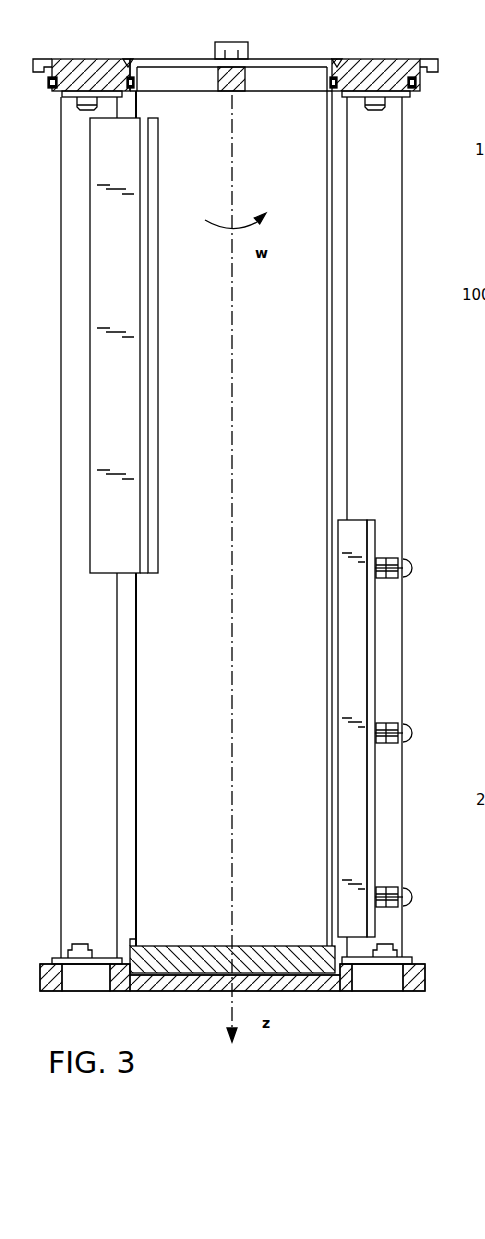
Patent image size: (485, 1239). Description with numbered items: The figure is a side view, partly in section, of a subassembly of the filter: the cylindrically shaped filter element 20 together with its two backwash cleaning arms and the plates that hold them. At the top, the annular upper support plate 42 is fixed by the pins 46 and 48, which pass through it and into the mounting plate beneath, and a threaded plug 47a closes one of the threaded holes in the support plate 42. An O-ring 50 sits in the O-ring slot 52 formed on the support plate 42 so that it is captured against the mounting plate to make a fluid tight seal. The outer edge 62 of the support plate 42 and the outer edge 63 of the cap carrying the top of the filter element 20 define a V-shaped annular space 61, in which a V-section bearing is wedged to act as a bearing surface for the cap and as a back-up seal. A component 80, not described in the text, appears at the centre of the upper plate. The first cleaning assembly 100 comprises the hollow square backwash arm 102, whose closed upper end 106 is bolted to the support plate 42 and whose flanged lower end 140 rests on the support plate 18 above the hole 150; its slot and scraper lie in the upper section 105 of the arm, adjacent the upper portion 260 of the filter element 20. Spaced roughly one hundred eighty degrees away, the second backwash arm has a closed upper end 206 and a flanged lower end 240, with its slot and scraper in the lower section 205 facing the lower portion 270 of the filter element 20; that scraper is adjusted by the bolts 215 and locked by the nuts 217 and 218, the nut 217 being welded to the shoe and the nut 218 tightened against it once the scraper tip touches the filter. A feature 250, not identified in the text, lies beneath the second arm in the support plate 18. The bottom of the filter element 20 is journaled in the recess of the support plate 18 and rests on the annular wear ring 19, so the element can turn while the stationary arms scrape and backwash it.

The pin 46 is at (32, 62).
The annular upper support plate 42 is at (363, 56).
The pin 48 is at (438, 65).
The outer edge of the support plate 62 is at (118, 61).
The V-shaped annular space 61 is at (128, 61).
The outer edge of the cap 63 is at (140, 67).
The threaded plug 47a is at (250, 48).
The shaft stub 80 is at (237, 92).
The O-ring 50 is at (47, 82).
The O-ring slot 52 is at (60, 97).
The closed upper end of the backwash arm 106 is at (77, 100).
The closed upper end of the second backwash arm 206 is at (401, 100).
The upper portion of the filter element 260 is at (347, 200).
The filter element 20 is at (332, 372).
The lower portion of the filter element 270 is at (165, 665).
The backwash arm 102 is at (90, 378).
The upper section of the backwash arm 105 is at (90, 447).
The first cleaning assembly 100 is at (76, 295).
The lower section of the second backwash arm 205 is at (328, 775).
The locking nut 217 is at (380, 558).
The locking nut 218 is at (390, 558).
The bolt 215 is at (412, 570).
The support plate 18 is at (425, 980).
The hole 150 is at (90, 982).
The support block 250 is at (385, 975).
The wear ring 19 is at (330, 985).
The flanged lower end 140 is at (105, 948).
The flanged lower end of the second backwash arm 240 is at (358, 948).